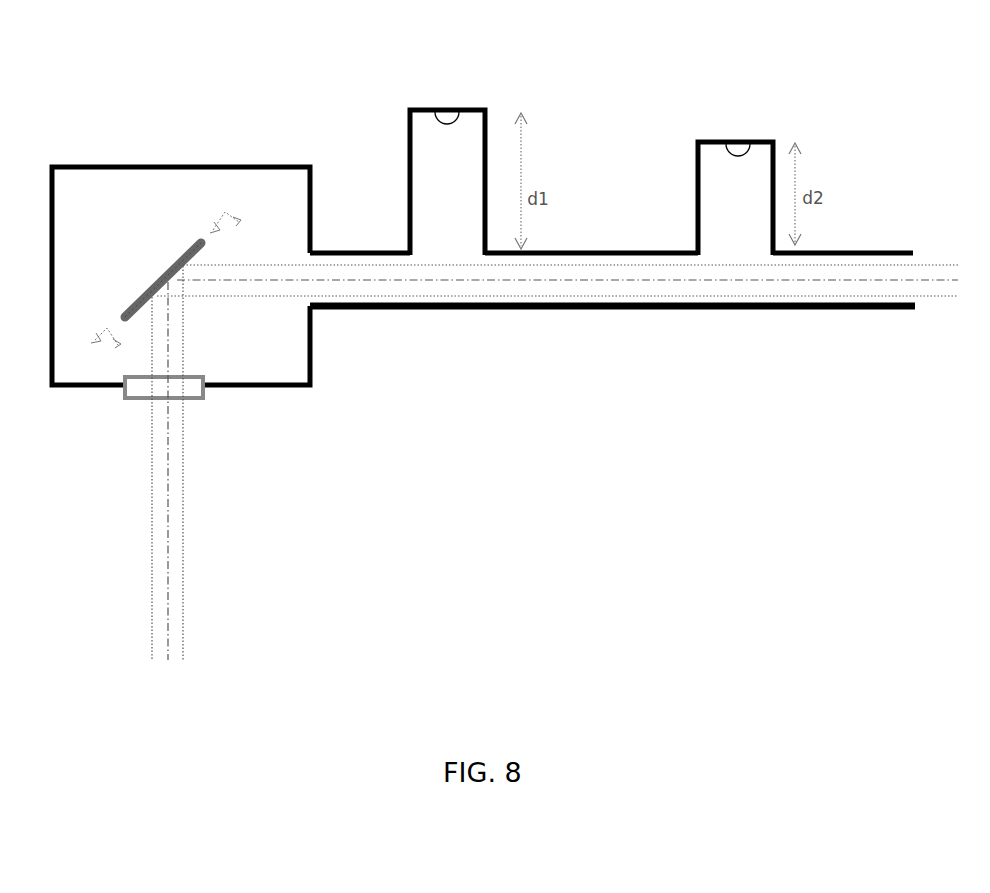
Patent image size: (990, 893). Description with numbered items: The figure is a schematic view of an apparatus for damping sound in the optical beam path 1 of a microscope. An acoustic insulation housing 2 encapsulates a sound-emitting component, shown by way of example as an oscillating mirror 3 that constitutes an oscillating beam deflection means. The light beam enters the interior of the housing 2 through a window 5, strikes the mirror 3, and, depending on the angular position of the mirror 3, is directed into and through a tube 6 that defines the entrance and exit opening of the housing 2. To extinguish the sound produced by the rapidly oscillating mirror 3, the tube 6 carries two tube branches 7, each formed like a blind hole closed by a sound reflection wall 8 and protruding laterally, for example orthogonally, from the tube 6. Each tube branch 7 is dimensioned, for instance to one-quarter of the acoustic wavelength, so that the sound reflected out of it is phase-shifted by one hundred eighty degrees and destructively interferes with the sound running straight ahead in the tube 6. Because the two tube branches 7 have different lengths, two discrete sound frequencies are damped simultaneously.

The optical beam path 1 is at (663, 278).
The acoustic insulation housing 2 is at (205, 167).
The oscillating mirror 3 is at (155, 257).
The window 5 is at (188, 400).
The tube 6 is at (606, 251).
The tube branch 7 is at (408, 168).
The sound reflection wall 8 is at (457, 110).